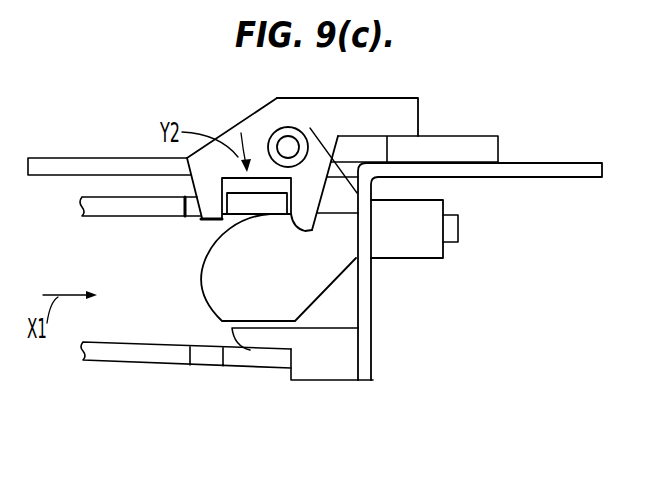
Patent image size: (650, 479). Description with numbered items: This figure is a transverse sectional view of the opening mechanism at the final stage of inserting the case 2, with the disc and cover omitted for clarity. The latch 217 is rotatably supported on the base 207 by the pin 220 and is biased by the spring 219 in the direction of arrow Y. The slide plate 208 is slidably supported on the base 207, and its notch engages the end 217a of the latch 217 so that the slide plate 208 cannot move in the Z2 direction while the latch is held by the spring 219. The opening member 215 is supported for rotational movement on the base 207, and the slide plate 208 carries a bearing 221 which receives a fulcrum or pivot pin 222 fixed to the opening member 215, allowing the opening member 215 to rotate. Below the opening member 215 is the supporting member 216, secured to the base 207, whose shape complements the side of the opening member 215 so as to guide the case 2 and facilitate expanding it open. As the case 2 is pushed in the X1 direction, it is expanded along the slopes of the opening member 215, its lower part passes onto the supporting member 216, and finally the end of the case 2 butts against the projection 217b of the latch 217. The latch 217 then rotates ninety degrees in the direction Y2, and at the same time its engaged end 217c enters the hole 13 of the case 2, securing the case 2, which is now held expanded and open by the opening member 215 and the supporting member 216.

The case 2 is at (102, 212).
The hole 13 is at (183, 214).
The base 207 is at (565, 168).
The slide plate 208 is at (497, 151).
The opening member 215 is at (287, 305).
The supporting member 216 is at (328, 368).
The latch 217 is at (313, 176).
The end of the latch 217a is at (412, 122).
The projection 217b is at (310, 231).
The engaged end 217c is at (200, 219).
The spring 219 is at (260, 123).
The pin 220 is at (290, 147).
The bearing 221 is at (407, 247).
The pivot pin 222 is at (458, 243).